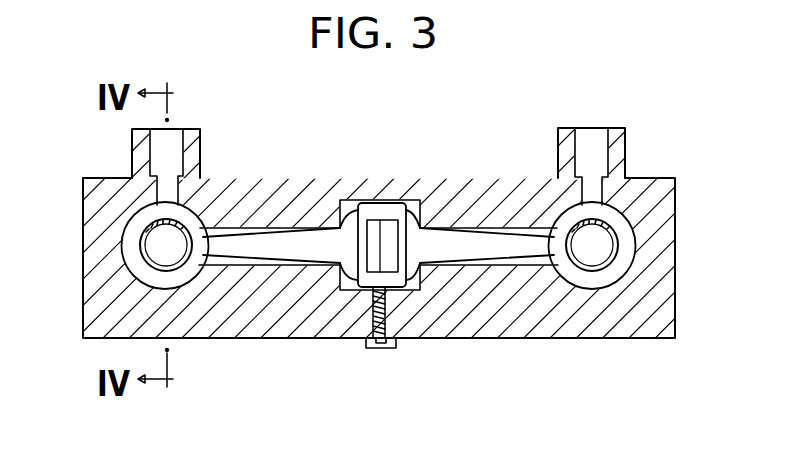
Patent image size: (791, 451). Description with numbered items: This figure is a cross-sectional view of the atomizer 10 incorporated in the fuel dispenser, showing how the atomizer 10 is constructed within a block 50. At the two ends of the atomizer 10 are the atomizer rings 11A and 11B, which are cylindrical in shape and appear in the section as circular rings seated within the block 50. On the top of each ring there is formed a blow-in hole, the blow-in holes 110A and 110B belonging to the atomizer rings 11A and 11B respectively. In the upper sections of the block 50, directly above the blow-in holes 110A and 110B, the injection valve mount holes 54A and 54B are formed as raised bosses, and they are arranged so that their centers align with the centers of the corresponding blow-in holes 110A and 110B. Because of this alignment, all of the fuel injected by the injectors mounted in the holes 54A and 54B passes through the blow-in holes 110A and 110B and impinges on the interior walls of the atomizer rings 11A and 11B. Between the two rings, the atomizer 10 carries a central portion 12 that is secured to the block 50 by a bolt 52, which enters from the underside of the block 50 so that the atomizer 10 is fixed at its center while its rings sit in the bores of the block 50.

The atomizer 10 is at (437, 231).
The central block of beam 12 is at (378, 228).
The atomizer ring 11A is at (141, 246).
The atomizer ring 11B is at (616, 247).
The blow-in hole 110A is at (160, 218).
The blow-in hole 110B is at (588, 218).
The injection valve mount hole 54A is at (177, 145).
The injection valve mount hole 54B is at (581, 142).
The block 50 is at (568, 323).
The bolt 52 is at (372, 350).